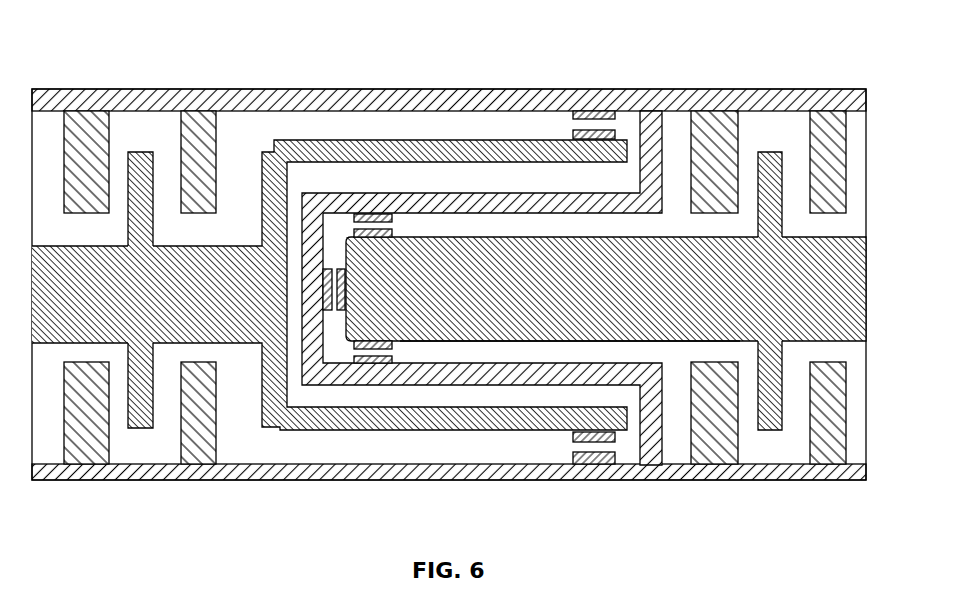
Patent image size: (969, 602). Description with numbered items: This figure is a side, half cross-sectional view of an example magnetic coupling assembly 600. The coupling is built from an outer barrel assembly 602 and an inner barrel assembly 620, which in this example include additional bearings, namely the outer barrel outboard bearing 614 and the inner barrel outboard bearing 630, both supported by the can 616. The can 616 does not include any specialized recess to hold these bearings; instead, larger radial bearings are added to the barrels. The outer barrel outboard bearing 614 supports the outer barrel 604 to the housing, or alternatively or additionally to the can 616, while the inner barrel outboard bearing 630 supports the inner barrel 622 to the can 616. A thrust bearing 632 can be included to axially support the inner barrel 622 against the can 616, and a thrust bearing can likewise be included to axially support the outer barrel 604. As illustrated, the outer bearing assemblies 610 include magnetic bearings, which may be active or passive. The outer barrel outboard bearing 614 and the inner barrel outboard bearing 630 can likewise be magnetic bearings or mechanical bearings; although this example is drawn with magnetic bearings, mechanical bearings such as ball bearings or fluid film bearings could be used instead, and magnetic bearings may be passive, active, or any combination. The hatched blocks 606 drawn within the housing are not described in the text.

The magnetic coupling assembly 600 is at (115, 44).
The outer barrel assembly 602 is at (265, 503).
The outer barrel 604 is at (367, 422).
The stator coils 606 is at (47, 330).
The outer bearing assemblies 610 is at (140, 430).
The outer barrel outboard bearing 614 is at (605, 440).
The can 616 is at (450, 375).
The inner barrel assembly 620 is at (611, 359).
The inner barrel 622 is at (533, 327).
The inner barrel outboard bearing 630 is at (375, 213).
The thrust bearing 632 is at (323, 288).